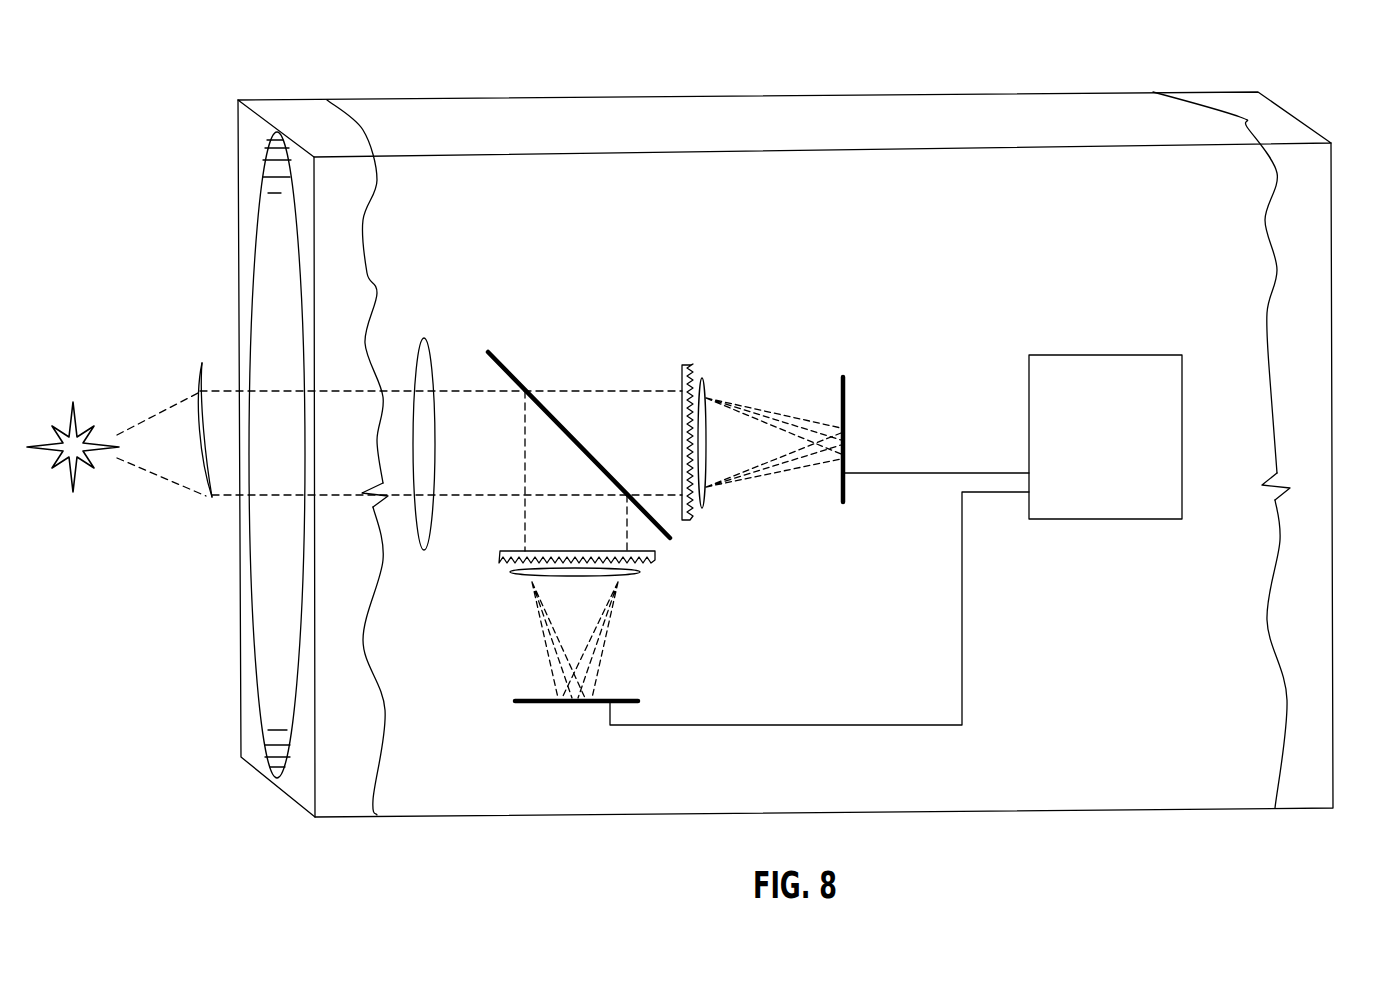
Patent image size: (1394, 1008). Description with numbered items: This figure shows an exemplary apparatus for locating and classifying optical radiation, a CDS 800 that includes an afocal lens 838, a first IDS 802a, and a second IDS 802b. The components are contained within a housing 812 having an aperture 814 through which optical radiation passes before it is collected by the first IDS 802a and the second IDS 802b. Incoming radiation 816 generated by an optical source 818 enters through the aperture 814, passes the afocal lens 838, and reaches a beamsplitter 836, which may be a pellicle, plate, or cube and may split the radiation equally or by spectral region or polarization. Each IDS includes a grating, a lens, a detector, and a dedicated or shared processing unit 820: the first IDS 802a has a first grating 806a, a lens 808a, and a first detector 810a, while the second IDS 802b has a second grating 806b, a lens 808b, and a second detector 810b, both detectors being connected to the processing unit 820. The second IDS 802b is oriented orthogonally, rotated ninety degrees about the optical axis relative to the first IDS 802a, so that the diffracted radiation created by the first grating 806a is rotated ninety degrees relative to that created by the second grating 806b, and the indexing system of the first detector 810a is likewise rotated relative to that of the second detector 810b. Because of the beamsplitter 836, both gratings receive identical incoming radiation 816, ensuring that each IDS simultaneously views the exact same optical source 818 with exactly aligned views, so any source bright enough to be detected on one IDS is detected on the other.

The CDS 800 is at (870, 56).
The housing 812 is at (1332, 207).
The aperture 814 is at (249, 585).
The incoming radiation 816 is at (222, 392).
The optical source 818 is at (76, 413).
The afocal lens 838 is at (424, 338).
The beamsplitter 836 is at (527, 389).
The first IDS 802a is at (792, 414).
The first grating 806a is at (682, 366).
The lens 808a is at (708, 410).
The first detector 810a is at (845, 390).
The second IDS 802b is at (532, 646).
The second grating 806b is at (500, 551).
The lens 808b is at (524, 577).
The second detector 810b is at (598, 705).
The processing unit 820 is at (1182, 372).